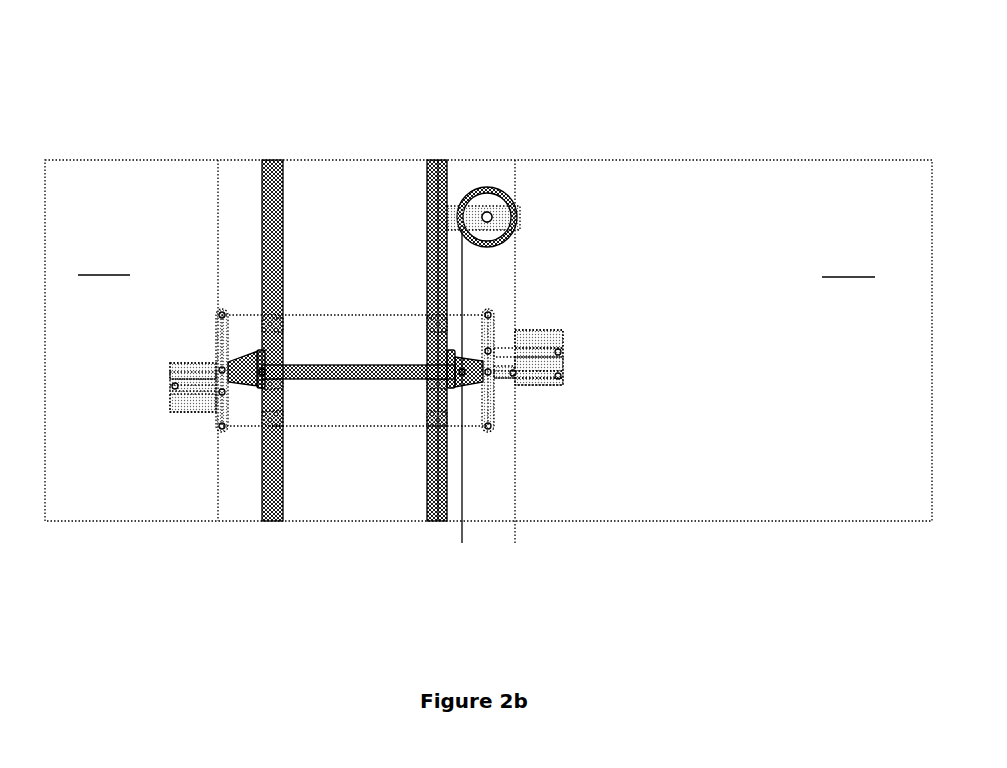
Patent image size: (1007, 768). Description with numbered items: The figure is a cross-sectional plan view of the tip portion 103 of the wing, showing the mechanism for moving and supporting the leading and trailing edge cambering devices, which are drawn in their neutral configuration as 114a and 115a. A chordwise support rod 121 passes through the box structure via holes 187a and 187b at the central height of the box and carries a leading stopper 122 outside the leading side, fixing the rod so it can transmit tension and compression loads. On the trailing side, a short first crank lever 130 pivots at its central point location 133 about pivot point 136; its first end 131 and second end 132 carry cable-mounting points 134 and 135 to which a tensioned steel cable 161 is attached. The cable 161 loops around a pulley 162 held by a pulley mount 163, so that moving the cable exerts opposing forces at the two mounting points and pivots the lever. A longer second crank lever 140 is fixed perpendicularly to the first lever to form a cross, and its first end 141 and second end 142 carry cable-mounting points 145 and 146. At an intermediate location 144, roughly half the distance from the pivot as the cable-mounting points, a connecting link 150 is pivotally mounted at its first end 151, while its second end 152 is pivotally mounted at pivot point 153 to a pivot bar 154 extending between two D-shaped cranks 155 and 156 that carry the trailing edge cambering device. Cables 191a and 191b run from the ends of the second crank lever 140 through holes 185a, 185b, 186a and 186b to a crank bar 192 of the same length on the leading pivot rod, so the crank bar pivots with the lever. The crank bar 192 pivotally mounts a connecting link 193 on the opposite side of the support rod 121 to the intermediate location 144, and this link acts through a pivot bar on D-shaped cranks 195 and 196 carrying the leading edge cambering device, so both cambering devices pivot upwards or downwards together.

The tip portion 103 is at (733, 125).
The leading edge cambering device in neutral configuration 114a is at (104, 263).
The trailing edge cambering device in neutral configuration 115a is at (848, 265).
The support rod 121 is at (335, 365).
The leading stopper 122 is at (262, 373).
The first crank lever 130 is at (503, 370).
The first end of first crank lever 131 is at (524, 505).
The cable-mounting point 134 is at (462, 375).
The second end of first crank lever 132 is at (626, 411).
The cable-mounting point 135 is at (514, 374).
The central point location of first crank lever 133 is at (585, 437).
The pivot point 136 is at (488, 374).
The second crank lever 140 is at (492, 333).
The first end of second crank lever 141 is at (581, 180).
The cable-mounting point 145 is at (490, 316).
The second end of second crank lever 142 is at (571, 498).
The cable-mounting point 146 is at (488, 427).
The connecting link 150 is at (647, 357).
The second end of connecting link 152 is at (647, 357).
The pivot point 153 is at (563, 353).
The first end of connecting link 151 is at (590, 286).
The intermediate location 144 is at (490, 350).
The pivot bar 154 is at (559, 350).
The D-shaped crank 155 is at (557, 378).
The D-shaped crank 156 is at (560, 338).
The cable 161 is at (519, 220).
The pulley 162 is at (491, 197).
The pulley mount 163 is at (461, 214).
The hole 185a is at (272, 316).
The hole 185b is at (273, 430).
The hole 186a is at (434, 160).
The hole 186b is at (438, 430).
The hole 187a is at (276, 385).
The hole 187b is at (432, 386).
The cable 191a is at (305, 315).
The cable 191b is at (248, 428).
The crank bar 192 is at (222, 342).
The connecting link 193 is at (172, 386).
The D-shaped crank 195 is at (187, 402).
The D-shaped crank 196 is at (183, 372).